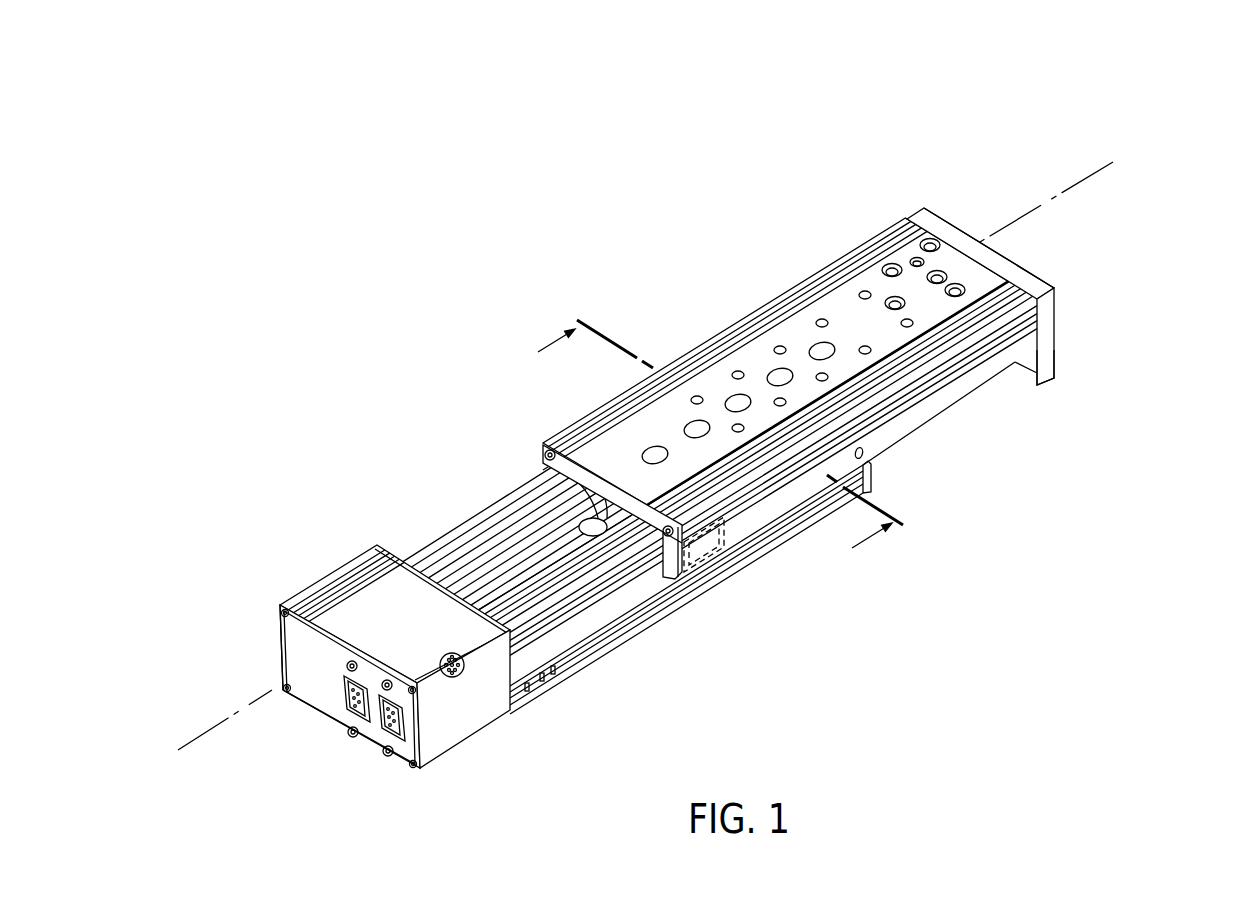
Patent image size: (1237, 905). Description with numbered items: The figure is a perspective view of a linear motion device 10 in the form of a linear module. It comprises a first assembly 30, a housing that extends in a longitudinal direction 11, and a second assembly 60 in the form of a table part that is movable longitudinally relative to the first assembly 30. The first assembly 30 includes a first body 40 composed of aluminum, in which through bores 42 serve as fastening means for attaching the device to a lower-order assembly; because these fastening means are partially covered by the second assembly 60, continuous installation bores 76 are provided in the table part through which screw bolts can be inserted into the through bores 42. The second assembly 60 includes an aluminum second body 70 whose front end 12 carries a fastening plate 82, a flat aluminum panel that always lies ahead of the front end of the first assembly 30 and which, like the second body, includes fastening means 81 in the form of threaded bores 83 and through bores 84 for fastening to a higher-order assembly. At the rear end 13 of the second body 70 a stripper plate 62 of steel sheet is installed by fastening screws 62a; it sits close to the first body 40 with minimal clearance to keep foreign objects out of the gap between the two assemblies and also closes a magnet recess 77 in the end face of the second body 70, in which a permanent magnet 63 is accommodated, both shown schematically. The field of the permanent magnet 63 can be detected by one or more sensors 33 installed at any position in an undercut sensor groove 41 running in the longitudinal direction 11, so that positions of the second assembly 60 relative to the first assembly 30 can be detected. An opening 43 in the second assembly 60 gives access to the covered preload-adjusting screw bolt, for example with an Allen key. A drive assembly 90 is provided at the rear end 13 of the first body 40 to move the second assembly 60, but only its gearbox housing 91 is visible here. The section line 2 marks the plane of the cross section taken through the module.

The linear motion device 10 is at (1170, 143).
The longitudinal direction 11 is at (1027, 217).
The front end 12 is at (1008, 168).
The rear end 13 is at (303, 771).
The section line 2- 2 is at (727, 418).
The first assembly 30 is at (597, 607).
The sensors 33 is at (537, 688).
The first body 40 is at (487, 527).
The undercut sensor groove 41 is at (825, 505).
The through bores 42 is at (587, 525).
The opening 43 is at (866, 453).
The second assembly 60 is at (760, 337).
The stripper plate 62 is at (558, 447).
The fastening screws 62a is at (667, 527).
The permanent magnet 63 is at (705, 545).
The second body 70 is at (975, 380).
The installation bores 76 is at (832, 343).
The magnet recess 77 is at (730, 535).
The fastening means 81 is at (1080, 311).
The fastening plate 82 is at (1050, 357).
The threaded bores 83 is at (823, 320).
The through bores 84 is at (907, 260).
The drive assembly 90 is at (353, 595).
The gearbox housing 91 is at (457, 707).